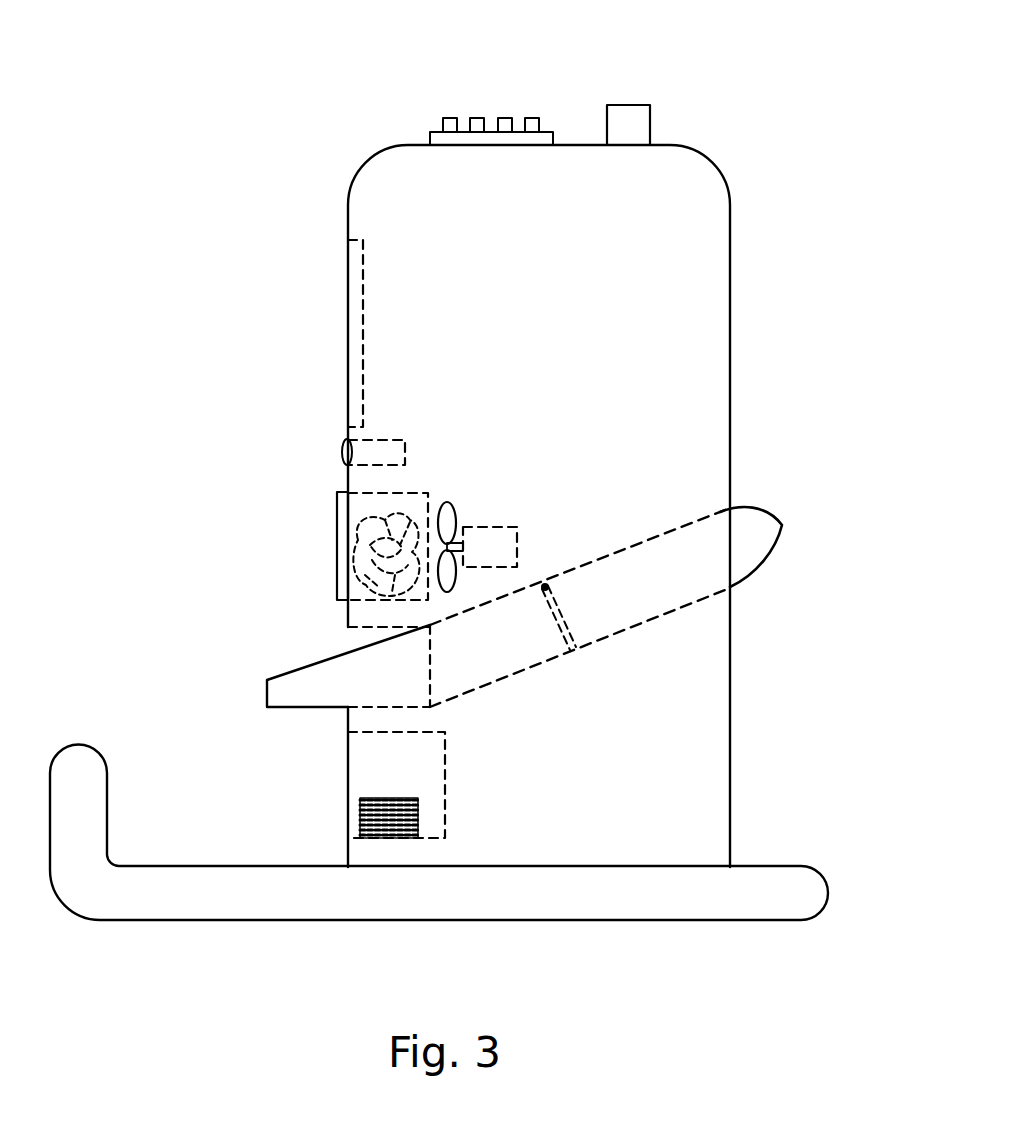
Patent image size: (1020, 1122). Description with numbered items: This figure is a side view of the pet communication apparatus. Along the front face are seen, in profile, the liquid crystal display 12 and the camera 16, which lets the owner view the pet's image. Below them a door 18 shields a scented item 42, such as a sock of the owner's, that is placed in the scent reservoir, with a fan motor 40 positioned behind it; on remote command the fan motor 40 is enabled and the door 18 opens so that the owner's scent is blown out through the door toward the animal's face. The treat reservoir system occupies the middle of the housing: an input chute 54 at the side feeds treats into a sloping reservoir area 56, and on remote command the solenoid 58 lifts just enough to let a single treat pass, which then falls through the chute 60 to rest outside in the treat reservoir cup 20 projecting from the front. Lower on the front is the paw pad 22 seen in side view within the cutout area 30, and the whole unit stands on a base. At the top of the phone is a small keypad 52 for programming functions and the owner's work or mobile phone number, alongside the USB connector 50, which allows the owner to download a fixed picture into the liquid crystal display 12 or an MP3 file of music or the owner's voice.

The liquid crystal display 12 is at (348, 323).
The camera 16 is at (343, 443).
The door 18 is at (337, 545).
The treat reservoir cup 20 is at (308, 663).
The paw pad 22 is at (360, 812).
The cutout area 30 is at (385, 763).
The fan motor 40 is at (497, 527).
The scented item 42 is at (387, 540).
The USB connector 50 is at (637, 105).
The keypad 52 is at (477, 118).
The input chute 54 is at (765, 508).
The reservoir area 56 is at (650, 620).
The solenoid 58 is at (563, 610).
The chute 60 is at (530, 668).